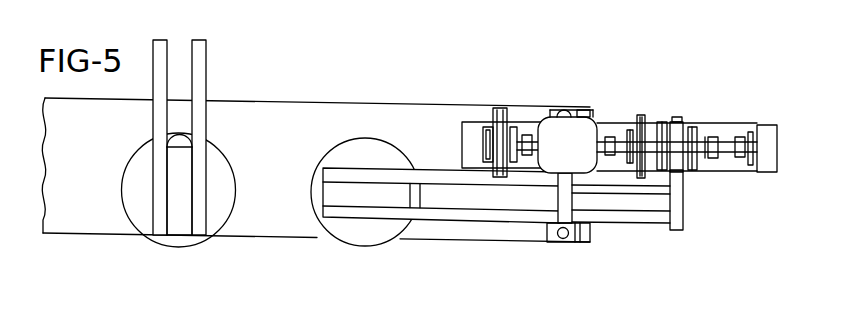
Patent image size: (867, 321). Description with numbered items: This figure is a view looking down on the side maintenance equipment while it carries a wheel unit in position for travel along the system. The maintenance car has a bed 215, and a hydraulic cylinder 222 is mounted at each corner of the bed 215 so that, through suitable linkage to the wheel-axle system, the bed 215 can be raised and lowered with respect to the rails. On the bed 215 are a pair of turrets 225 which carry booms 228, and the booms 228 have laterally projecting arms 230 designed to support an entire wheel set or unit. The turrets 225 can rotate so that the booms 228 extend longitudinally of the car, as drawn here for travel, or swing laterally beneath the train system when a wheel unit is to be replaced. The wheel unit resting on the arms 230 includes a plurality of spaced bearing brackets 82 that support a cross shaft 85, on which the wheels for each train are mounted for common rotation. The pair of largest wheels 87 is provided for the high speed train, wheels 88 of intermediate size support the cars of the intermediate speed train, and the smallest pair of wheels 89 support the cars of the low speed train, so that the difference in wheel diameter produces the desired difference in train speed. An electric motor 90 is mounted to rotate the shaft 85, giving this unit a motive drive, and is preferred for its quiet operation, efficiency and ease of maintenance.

The bed 215 is at (258, 227).
The turrets 225 is at (144, 220).
The booms 228 is at (200, 43).
The laterally projecting arms 230 is at (566, 198).
The hydraulic cylinder 222 is at (563, 239).
The bearing brackets 82 is at (485, 140).
The largest wheels 87 is at (500, 110).
The electric motor 90 is at (580, 150).
The cross shaft 85 is at (622, 140).
The wheels of intermediate size 88 is at (693, 125).
The smallest pair of wheels 89 is at (742, 137).